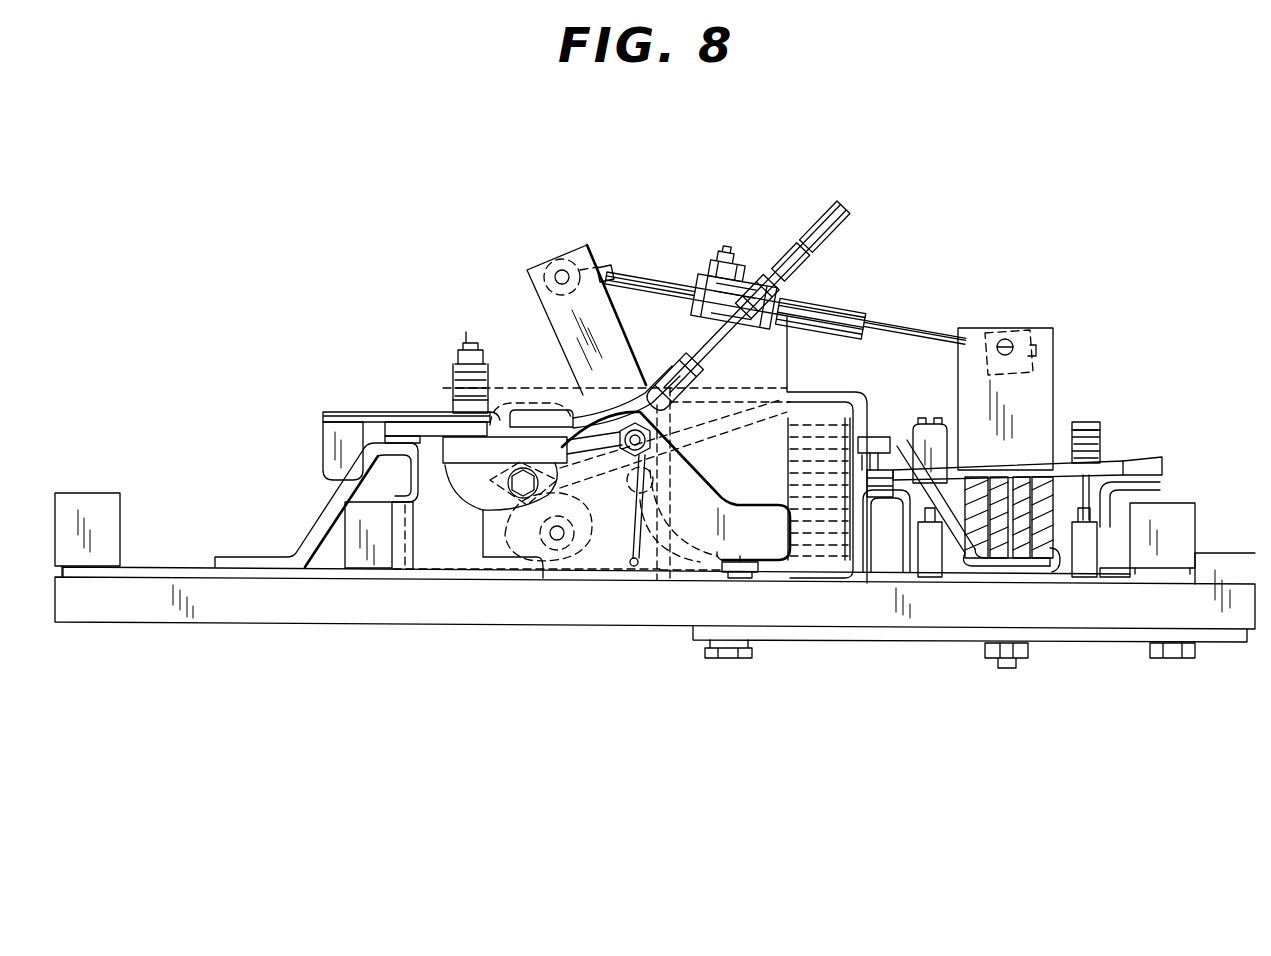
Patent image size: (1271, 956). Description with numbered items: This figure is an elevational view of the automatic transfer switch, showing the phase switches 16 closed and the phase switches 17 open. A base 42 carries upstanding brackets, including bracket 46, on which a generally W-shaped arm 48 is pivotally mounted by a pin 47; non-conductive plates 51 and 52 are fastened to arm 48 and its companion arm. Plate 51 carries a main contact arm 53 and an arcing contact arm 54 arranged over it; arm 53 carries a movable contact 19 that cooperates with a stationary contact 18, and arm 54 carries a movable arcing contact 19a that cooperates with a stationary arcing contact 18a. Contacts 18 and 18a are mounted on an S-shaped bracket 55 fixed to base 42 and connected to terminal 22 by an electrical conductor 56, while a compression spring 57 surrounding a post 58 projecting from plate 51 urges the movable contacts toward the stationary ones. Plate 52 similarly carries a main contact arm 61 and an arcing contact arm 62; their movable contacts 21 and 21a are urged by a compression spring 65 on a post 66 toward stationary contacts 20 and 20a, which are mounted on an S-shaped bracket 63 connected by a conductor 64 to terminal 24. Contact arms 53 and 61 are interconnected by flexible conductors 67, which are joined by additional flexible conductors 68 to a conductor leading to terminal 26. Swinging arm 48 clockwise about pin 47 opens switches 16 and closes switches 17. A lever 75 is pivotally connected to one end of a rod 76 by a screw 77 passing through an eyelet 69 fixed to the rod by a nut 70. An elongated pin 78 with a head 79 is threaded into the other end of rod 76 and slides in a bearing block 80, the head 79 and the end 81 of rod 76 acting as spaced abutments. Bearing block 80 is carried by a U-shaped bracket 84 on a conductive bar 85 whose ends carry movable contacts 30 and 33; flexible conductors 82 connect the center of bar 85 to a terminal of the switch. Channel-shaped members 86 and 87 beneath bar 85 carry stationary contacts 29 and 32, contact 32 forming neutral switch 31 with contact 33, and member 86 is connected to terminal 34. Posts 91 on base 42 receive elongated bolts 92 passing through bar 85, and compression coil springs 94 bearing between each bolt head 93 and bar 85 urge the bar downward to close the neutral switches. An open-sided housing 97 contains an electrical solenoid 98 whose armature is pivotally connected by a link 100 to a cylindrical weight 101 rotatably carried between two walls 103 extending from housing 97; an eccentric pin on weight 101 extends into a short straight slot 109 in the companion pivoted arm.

The phase switches 16 is at (385, 384).
The phase switches 17 is at (938, 284).
The stationary contact 18 is at (387, 472).
The stationary arcing contact 18a is at (323, 433).
The movable contact 19 is at (380, 427).
The movable arcing contact 19a is at (343, 412).
The stationary contact 20 is at (873, 437).
The stationary arcing contact 20a is at (933, 423).
The movable contact 21 is at (810, 278).
The movable arcing contact 21a is at (848, 230).
The terminal 22 is at (78, 495).
The terminal 24 is at (1190, 524).
The terminal 26 is at (1257, 550).
The stationary contact 29 is at (921, 496).
The movable contact 30 is at (882, 470).
The neutral switch 31 is at (1183, 456).
The stationary contact 32 is at (1160, 484).
The movable contact 33 is at (1165, 466).
The terminal 34 is at (347, 542).
The base 42 is at (440, 612).
The upstanding bracket 46 is at (608, 573).
The pin 47 is at (655, 440).
The W-shaped arm 48 is at (768, 447).
The non-conductive plate 51 is at (430, 430).
The non-conductive plate 52 is at (775, 343).
The main contact arm 53 is at (412, 445).
The arcing contact arm 54 is at (417, 413).
The S-shaped bracket 55 is at (305, 537).
The electrical conductor 56 is at (150, 566).
The compression spring 57 is at (502, 412).
The post 58 is at (467, 346).
The main contact arm 61 is at (790, 262).
The arcing contact arm 62 is at (818, 230).
The S-shaped bracket 63 is at (968, 550).
The conductor 64 is at (1020, 590).
The compression spring 65 is at (742, 288).
The post 66 is at (695, 262).
The flexible conductors 67 is at (637, 392).
The additional flexible conductors 68 is at (665, 511).
The eyelet 69 is at (1070, 640).
The nut 70 is at (607, 266).
The lever 75 is at (560, 316).
The rod 76 is at (650, 280).
The screw 77 is at (562, 270).
The elongated pin 78 is at (913, 327).
The head 79 is at (1036, 346).
The bearing block 80 is at (1010, 338).
The end of rod 81 is at (870, 320).
The flexible conductors 82 is at (1050, 556).
The U-shaped bracket 84 is at (1045, 380).
The electrically conductive bar 85 is at (1130, 462).
The channel-shaped member 86 is at (890, 527).
The channel-shaped member 87 is at (1115, 568).
The upstanding posts 91 is at (928, 560).
The elongated bolt 92 is at (920, 515).
The head 93 is at (1086, 420).
The compression coil spring 94 is at (1102, 448).
The open-sided housing 97 is at (832, 394).
The electrical solenoid 98 is at (822, 548).
The link 100 is at (630, 530).
The cylindrical weight 101 is at (448, 532).
The walls 103 is at (535, 402).
The short straight slot 109 is at (567, 572).